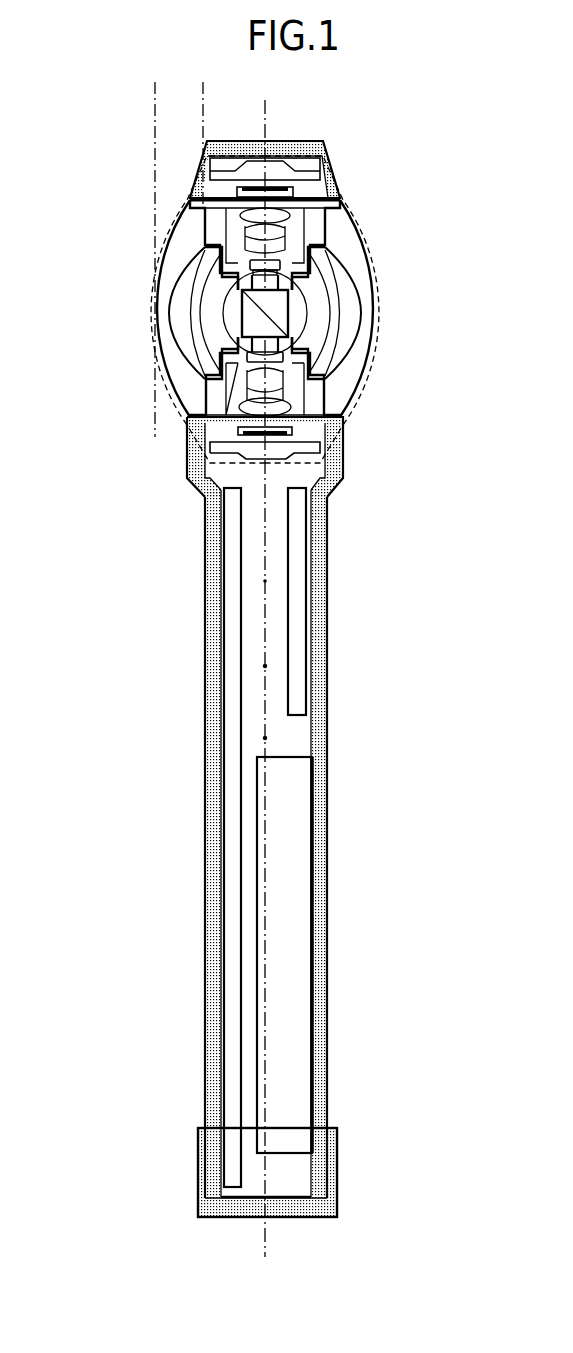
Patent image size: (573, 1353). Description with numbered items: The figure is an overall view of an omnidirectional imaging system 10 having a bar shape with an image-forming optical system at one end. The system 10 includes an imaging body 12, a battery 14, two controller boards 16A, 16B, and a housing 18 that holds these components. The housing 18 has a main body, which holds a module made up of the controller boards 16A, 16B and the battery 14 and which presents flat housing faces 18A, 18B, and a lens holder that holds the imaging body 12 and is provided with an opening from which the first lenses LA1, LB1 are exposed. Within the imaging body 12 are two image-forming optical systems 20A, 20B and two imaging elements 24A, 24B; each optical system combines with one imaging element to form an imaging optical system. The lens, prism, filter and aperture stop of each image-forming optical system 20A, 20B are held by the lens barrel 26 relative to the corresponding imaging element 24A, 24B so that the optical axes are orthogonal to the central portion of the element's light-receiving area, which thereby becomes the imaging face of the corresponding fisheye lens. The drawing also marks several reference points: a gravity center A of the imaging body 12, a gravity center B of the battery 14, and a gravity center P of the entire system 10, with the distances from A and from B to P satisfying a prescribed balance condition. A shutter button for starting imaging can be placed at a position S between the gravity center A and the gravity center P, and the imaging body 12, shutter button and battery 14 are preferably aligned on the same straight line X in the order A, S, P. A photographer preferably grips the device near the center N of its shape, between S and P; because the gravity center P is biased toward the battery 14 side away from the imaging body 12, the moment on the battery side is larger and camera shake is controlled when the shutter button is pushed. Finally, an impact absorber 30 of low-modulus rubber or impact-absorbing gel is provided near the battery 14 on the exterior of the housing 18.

The omnidirectional imaging system 10 is at (70, 175).
The imaging body 12 is at (357, 410).
The battery 14 is at (300, 823).
The controller board 16A is at (232, 823).
The controller board 16B is at (297, 692).
The housing 18 is at (317, 631).
The flat housing face 18A is at (205, 913).
The flat housing face 18B is at (320, 898).
The image-forming optical system 20A is at (148, 358).
The image-forming optical system 20B is at (385, 370).
The imaging element 24A is at (205, 447).
The imaging element 24B is at (306, 176).
The lens barrel 26 is at (313, 228).
The impact absorber 30 is at (207, 1204).
The gravity center of the imaging body A is at (265, 313).
The gravity center of the battery B is at (284, 955).
The first lens LA1 is at (157, 335).
The first lens LB1 is at (367, 330).
The center of the shape of the omnidirectional imaging system N is at (265, 666).
The gravity center of the entire omnidirectional imaging system P is at (265, 738).
The shutter button position S is at (265, 581).
The straight line X is at (265, 694).